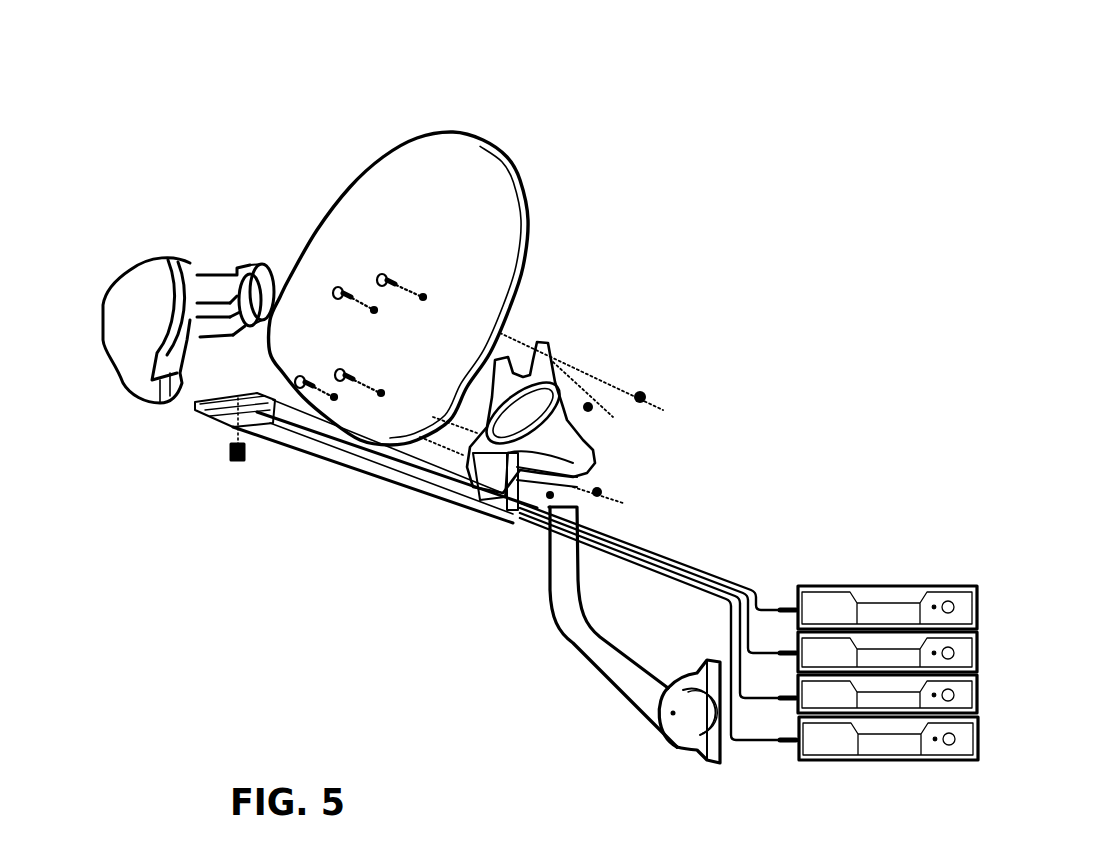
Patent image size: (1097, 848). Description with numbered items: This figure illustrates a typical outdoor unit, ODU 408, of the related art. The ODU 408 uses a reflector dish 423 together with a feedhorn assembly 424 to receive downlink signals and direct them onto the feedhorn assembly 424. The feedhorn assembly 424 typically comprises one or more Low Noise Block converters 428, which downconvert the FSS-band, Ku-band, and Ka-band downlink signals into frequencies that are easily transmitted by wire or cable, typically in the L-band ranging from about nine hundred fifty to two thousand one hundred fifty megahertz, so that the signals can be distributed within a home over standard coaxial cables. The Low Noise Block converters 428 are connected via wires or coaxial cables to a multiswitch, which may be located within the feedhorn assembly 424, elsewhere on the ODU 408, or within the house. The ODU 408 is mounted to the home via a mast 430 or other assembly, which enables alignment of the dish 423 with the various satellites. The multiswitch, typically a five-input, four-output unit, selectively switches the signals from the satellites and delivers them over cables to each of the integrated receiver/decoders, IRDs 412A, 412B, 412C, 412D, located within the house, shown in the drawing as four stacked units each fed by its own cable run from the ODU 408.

The ODU 408 is at (488, 83).
The reflector dish 423 is at (385, 158).
The feedhorn assembly 424 is at (140, 260).
The Low Noise Block converter 428 is at (223, 273).
The mast 430 is at (593, 642).
The IRD 412A is at (942, 585).
The IRD 412B is at (978, 648).
The IRD 412C is at (978, 695).
The IRD 412D is at (978, 732).